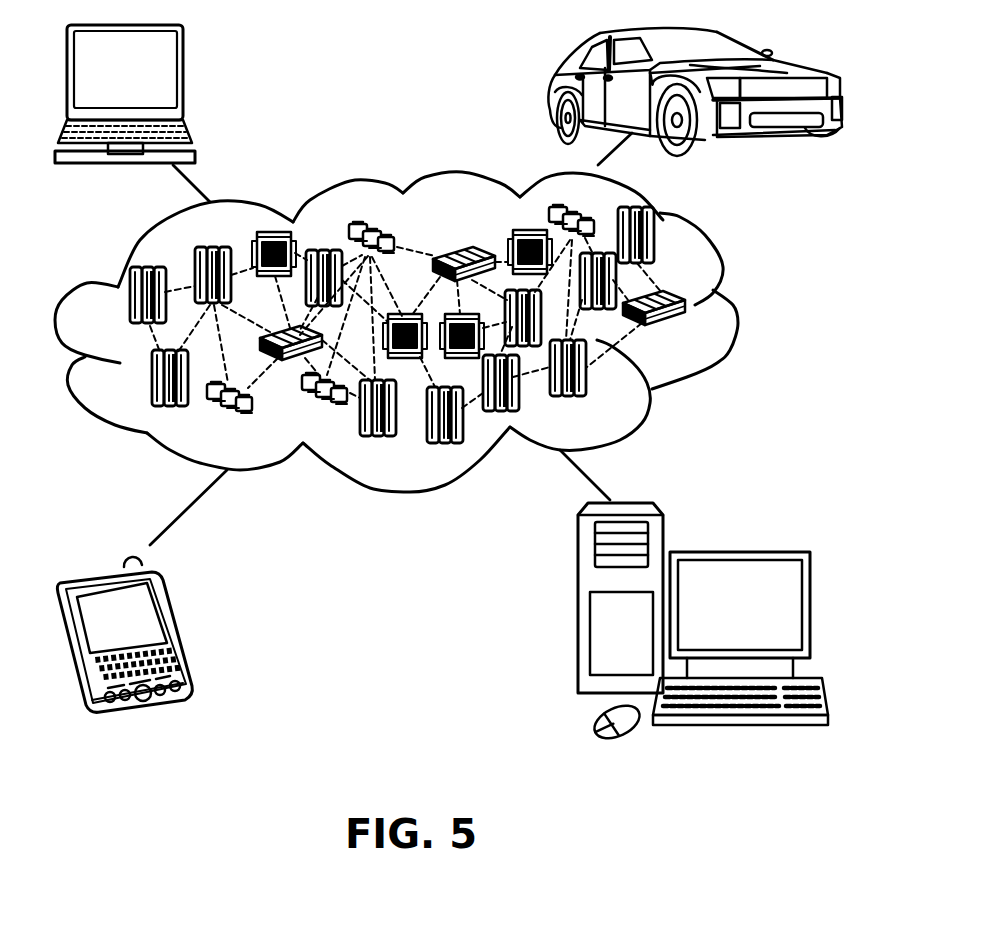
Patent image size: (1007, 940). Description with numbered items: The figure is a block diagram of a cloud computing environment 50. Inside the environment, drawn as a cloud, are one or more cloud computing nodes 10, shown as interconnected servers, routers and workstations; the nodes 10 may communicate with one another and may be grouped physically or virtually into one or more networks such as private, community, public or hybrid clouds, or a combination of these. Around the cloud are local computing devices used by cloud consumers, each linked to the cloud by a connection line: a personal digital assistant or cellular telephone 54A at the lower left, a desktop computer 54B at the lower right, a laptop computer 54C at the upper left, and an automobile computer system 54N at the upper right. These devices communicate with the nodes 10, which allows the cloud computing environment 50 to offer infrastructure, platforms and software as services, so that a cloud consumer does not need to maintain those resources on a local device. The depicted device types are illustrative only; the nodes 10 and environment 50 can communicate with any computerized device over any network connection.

The cloud computing nodes 10 is at (694, 336).
The cloud computing environment 50 is at (737, 308).
The personal digital assistant or cellular telephone 54A is at (177, 628).
The desktop computer 54B is at (737, 552).
The laptop computer 54C is at (183, 77).
The automobile computer system 54N is at (555, 88).